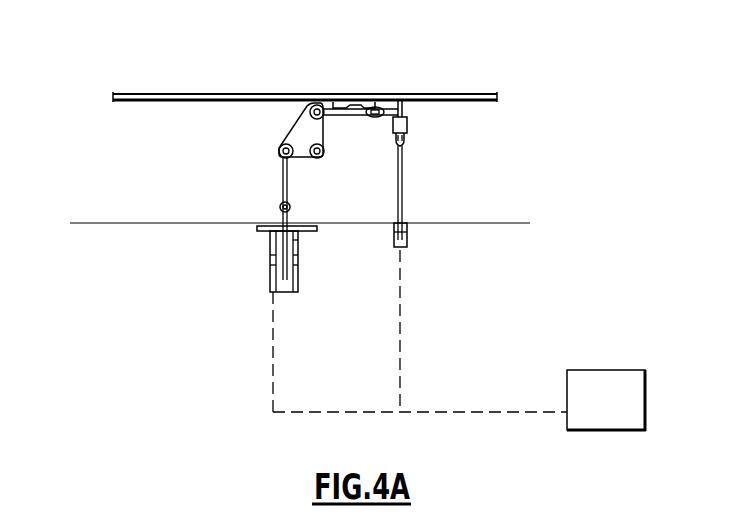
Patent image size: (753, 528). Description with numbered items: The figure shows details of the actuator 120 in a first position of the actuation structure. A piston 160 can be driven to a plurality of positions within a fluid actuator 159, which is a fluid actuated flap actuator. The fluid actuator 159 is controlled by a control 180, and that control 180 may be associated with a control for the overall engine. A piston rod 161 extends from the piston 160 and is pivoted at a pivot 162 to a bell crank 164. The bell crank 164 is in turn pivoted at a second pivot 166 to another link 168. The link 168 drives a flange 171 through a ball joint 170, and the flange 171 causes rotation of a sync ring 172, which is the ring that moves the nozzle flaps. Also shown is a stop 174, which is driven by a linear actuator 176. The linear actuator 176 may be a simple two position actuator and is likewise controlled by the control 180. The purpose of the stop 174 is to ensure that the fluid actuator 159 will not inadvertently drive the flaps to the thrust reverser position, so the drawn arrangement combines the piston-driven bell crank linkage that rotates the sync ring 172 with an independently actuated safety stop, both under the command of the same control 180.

The actuator 120 is at (101, 175).
The fluid actuator 159 is at (270, 286).
The piston 160 is at (298, 240).
The piston rod 161 is at (283, 194).
The pivot 162 is at (282, 152).
The bell crank 164 is at (306, 131).
The pivot 166 is at (325, 103).
The link 168 is at (348, 101).
The ball joint 170 is at (406, 116).
The flange 171 is at (384, 108).
The sync ring 172 is at (167, 92).
The stop 174 is at (409, 128).
The linear actuator 176 is at (404, 246).
The control 180 is at (626, 413).